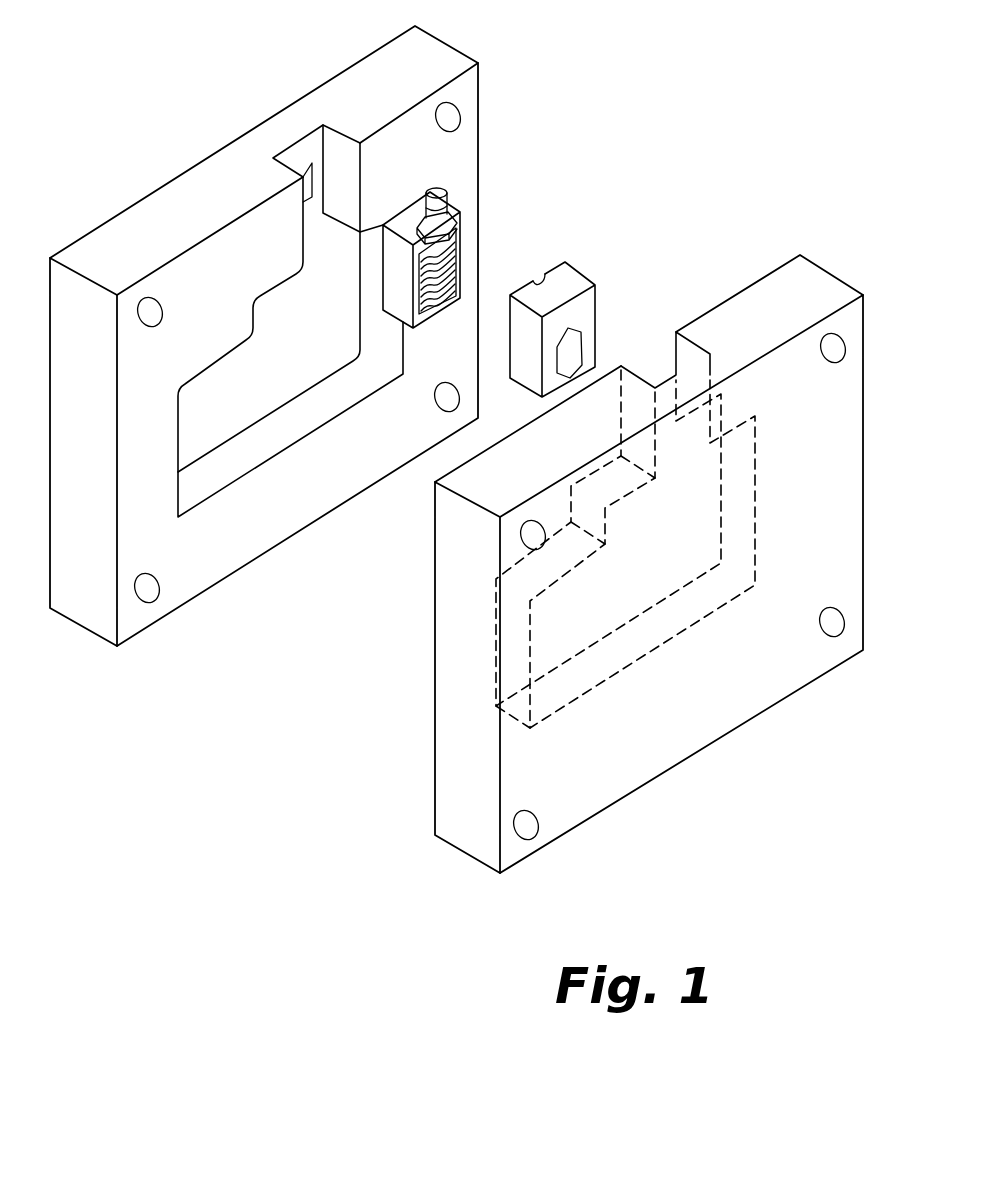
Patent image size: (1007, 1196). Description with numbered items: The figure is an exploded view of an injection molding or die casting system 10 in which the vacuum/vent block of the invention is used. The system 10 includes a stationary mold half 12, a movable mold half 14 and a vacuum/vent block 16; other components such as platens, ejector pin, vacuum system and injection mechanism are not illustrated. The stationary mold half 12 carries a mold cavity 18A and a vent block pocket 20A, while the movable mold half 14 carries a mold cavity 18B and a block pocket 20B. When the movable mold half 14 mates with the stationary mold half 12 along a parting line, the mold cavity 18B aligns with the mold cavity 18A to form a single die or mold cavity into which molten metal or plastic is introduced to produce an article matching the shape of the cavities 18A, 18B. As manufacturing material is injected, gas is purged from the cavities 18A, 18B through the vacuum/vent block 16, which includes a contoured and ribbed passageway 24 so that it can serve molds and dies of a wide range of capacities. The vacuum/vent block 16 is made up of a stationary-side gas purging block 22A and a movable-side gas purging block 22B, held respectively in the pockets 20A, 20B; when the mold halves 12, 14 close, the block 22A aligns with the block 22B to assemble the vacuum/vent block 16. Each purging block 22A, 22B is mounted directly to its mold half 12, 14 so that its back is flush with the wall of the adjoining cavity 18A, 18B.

The injection molding or die casting system 10 is at (722, 194).
The stationary mold half 12 is at (95, 595).
The movable mold half 14 is at (463, 773).
The vacuum/vent block 16 is at (572, 216).
The mold cavity 18A is at (207, 418).
The mold cavity 18B is at (633, 618).
The vent block pocket 20A is at (295, 155).
The block pocket 20B is at (680, 345).
The stationary-side gas purging block 22A is at (458, 218).
The movable-side gas purging block 22B is at (583, 305).
The contoured and ribbed passageway 24 is at (442, 292).